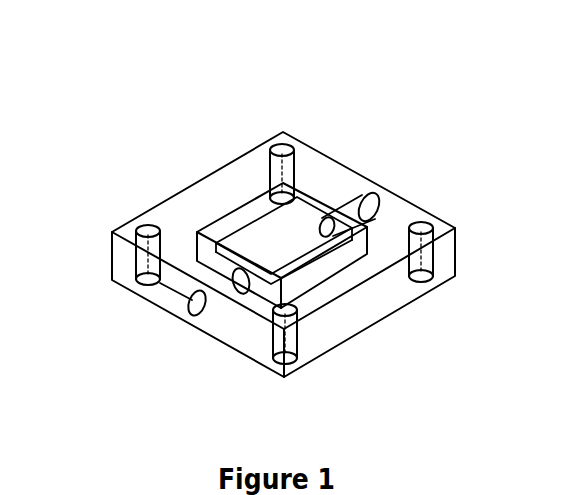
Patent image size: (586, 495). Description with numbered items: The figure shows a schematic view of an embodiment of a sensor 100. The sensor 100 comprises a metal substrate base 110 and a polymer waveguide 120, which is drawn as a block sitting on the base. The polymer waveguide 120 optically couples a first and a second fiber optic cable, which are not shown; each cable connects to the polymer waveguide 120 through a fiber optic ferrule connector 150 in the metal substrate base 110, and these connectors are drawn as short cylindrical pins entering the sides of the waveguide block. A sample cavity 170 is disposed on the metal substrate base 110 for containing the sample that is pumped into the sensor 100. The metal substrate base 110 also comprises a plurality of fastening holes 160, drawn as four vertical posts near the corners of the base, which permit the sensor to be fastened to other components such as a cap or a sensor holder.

The sensor 100 is at (325, 88).
The metal substrate base 110 is at (458, 249).
The polymer waveguide 120 is at (293, 237).
The fiber optic ferrule connector 150 is at (388, 191).
The fastening holes 160 is at (282, 135).
The sample cavity 170 is at (313, 267).